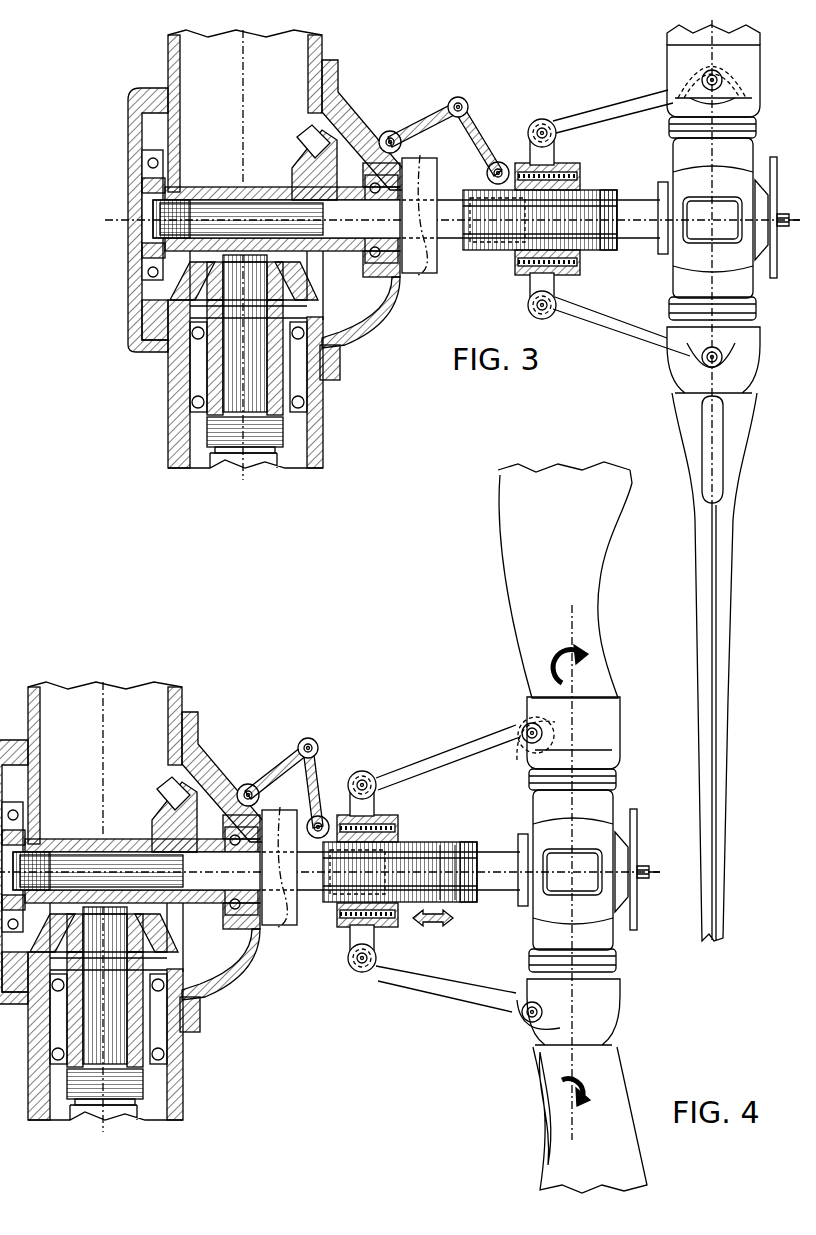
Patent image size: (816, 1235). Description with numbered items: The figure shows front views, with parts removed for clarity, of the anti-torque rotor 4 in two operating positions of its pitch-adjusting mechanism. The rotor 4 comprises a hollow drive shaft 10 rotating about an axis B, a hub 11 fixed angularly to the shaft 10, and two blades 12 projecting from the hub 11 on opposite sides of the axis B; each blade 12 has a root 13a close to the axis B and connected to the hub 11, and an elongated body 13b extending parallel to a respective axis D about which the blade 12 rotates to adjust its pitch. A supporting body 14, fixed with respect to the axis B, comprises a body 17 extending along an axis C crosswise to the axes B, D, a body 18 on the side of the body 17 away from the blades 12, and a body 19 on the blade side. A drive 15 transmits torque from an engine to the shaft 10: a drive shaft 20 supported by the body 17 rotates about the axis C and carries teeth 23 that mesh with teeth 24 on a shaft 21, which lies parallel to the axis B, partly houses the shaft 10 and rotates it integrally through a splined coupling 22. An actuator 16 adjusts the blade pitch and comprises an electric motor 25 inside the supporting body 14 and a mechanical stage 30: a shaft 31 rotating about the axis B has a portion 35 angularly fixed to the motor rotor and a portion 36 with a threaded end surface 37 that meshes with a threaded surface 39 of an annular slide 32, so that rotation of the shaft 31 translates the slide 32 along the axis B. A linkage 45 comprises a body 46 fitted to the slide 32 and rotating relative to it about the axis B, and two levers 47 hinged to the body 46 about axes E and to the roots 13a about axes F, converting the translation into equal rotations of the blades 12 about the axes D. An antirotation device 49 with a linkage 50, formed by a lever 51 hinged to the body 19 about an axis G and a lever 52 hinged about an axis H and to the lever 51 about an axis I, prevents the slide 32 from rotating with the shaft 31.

In FIG. 3, the rotor 4 is at (447, 480).
In FIG. 4, the rotor 4 is at (343, 827).
In FIG. 3, the drive shaft 10 is at (637, 212).
In FIG. 4, the drive shaft 10 is at (482, 903).
In FIG. 3, the hub 11 is at (737, 178).
In FIG. 4, the hub 11 is at (595, 830).
In FIG. 3, the blades 12 is at (712, 480).
In FIG. 4, the blades 12 is at (568, 827).
In FIG. 3, the root 13a is at (742, 79).
In FIG. 4, the root 13a is at (598, 728).
In FIG. 3, the elongated body 13b is at (718, 703).
In FIG. 4, the elongated body 13b is at (583, 540).
In FIG. 3, the supporting body 14 is at (249, 275).
In FIG. 4, the supporting body 14 is at (132, 901).
In FIG. 3, the drive 15 is at (195, 455).
In FIG. 4, the drive 15 is at (72, 1108).
In FIG. 3, the actuator 16 is at (509, 193).
In FIG. 4, the actuator 16 is at (374, 827).
In FIG. 3, the body 17 is at (322, 45).
In FIG. 4, the body 17 is at (168, 692).
In FIG. 3, the body 18 is at (150, 88).
In FIG. 4, the body 18 is at (14, 872).
In FIG. 3, the body 19 is at (342, 95).
In FIG. 4, the body 19 is at (193, 730).
In FIG. 3, the drive shaft 20 is at (233, 378).
In FIG. 4, the drive shaft 20 is at (117, 1030).
In FIG. 3, the shaft 21 is at (293, 188).
In FIG. 4, the shaft 21 is at (157, 838).
In FIG. 3, the splined coupling 22 is at (228, 210).
In FIG. 4, the splined coupling 22 is at (78, 865).
In FIG. 3, the teeth 23 is at (170, 293).
In FIG. 4, the teeth 23 is at (177, 943).
In FIG. 3, the teeth 24 is at (305, 157).
In FIG. 4, the teeth 24 is at (172, 802).
In FIG. 3, the electric motor 25 is at (420, 272).
In FIG. 4, the electric motor 25 is at (278, 923).
In FIG. 3, the mechanical stage 30 is at (618, 480).
In FIG. 4, the mechanical stage 30 is at (492, 827).
In FIG. 4, the shaft 31 is at (467, 855).
In FIG. 3, the slide 32 is at (556, 132).
In FIG. 4, the slide 32 is at (397, 823).
In FIG. 3, the portion 35 is at (434, 204).
In FIG. 4, the portion 35 is at (289, 857).
In FIG. 3, the portion 36 is at (587, 212).
In FIG. 4, the portion 36 is at (422, 860).
In FIG. 3, the threaded end surface 37 is at (601, 189).
In FIG. 4, the threaded end surface 37 is at (408, 915).
In FIG. 3, the threaded surface 39 is at (548, 196).
In FIG. 4, the threaded surface 39 is at (382, 848).
In FIG. 3, the linkage 45 is at (671, 216).
In FIG. 4, the linkage 45 is at (513, 857).
In FIG. 3, the body 46 is at (562, 270).
In FIG. 4, the body 46 is at (350, 927).
In FIG. 3, the levers 47 is at (652, 96).
In FIG. 4, the levers 47 is at (440, 760).
In FIG. 3, the antirotation device 49 is at (444, 106).
In FIG. 4, the antirotation device 49 is at (301, 736).
In FIG. 3, the linkage 50 is at (458, 96).
In FIG. 4, the linkage 50 is at (292, 740).
In FIG. 3, the lever 51 is at (424, 112).
In FIG. 4, the lever 51 is at (263, 782).
In FIG. 3, the lever 52 is at (492, 150).
In FIG. 4, the lever 52 is at (317, 785).
In FIG. 3, the axis B is at (786, 238).
In FIG. 4, the axis B is at (663, 877).
In FIG. 3, the axis C is at (248, 470).
In FIG. 4, the axis C is at (113, 1138).
In FIG. 3, the axis D is at (713, 453).
In FIG. 4, the axis D is at (575, 638).
In FIG. 3, the axis E is at (542, 118).
In FIG. 4, the axis E is at (378, 792).
In FIG. 3, the axis F is at (745, 87).
In FIG. 4, the axis F is at (545, 738).
In FIG. 3, the axis G is at (390, 130).
In FIG. 4, the axis G is at (248, 785).
In FIG. 3, the axis H is at (486, 173).
In FIG. 4, the axis H is at (320, 818).
In FIG. 3, the axis I is at (458, 117).
In FIG. 4, the axis I is at (312, 740).